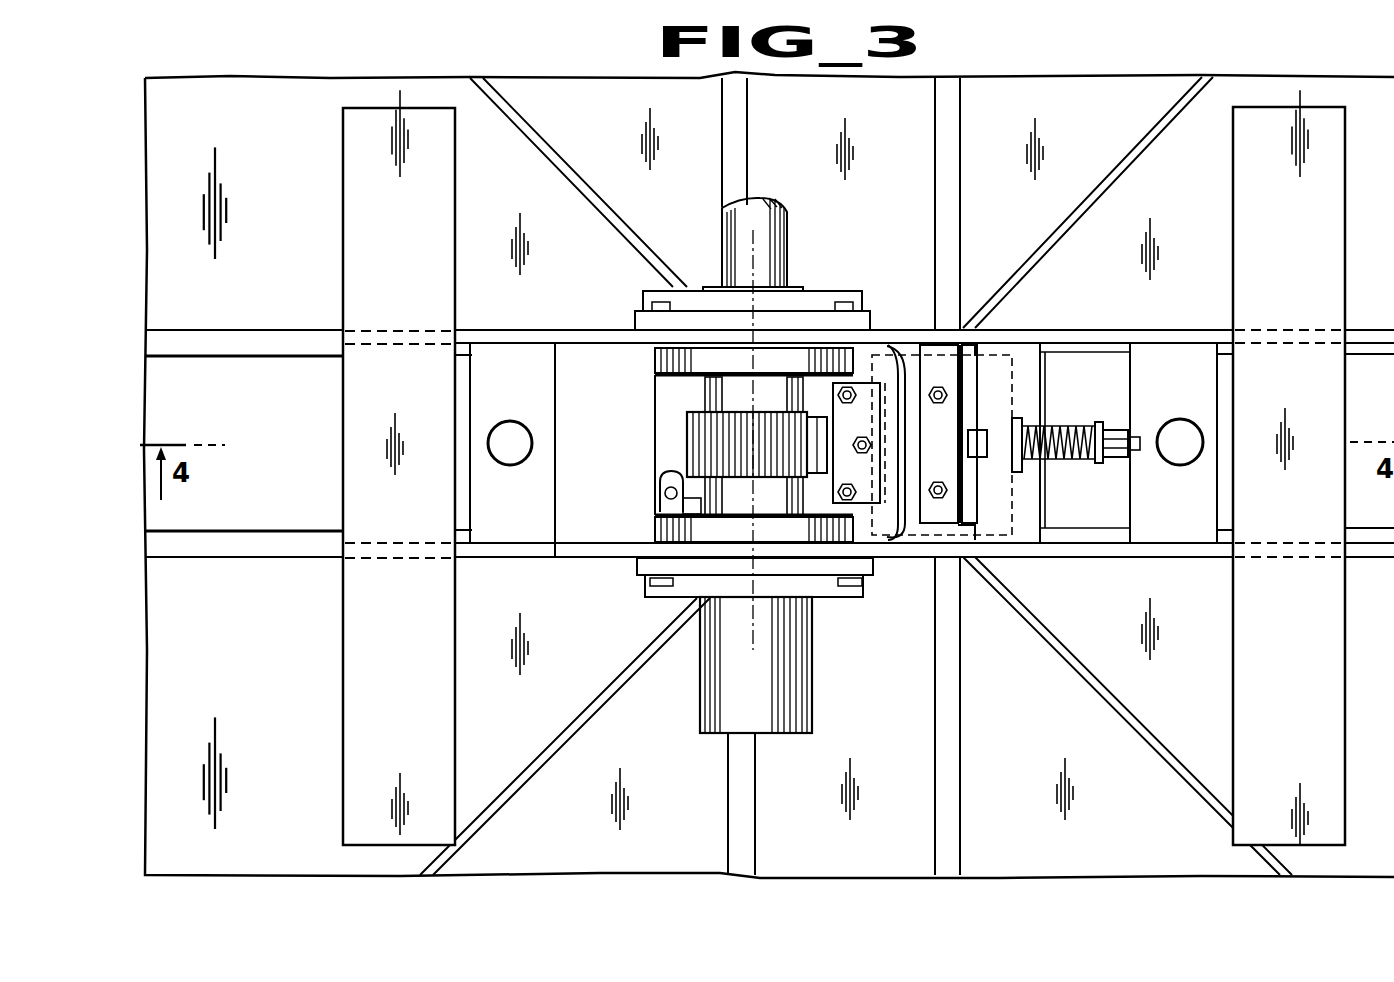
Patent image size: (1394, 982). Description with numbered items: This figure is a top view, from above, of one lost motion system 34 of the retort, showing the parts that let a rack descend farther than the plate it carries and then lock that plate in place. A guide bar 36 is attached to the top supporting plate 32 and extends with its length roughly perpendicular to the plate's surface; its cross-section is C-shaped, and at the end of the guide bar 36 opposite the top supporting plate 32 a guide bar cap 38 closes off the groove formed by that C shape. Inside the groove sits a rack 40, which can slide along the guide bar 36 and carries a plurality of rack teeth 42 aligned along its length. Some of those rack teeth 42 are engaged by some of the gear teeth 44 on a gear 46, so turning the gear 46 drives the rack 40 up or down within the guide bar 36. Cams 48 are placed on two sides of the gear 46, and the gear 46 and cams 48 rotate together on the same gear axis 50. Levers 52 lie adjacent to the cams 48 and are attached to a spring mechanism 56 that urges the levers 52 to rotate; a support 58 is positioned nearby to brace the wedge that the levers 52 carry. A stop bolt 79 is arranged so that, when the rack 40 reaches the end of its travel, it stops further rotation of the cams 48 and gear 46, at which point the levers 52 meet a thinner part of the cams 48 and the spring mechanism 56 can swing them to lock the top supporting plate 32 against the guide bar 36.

The top supporting plate 32 is at (507, 723).
The lost motion system 34 is at (645, 452).
The guide bar 36 is at (830, 343).
The guide bar cap 38 is at (885, 503).
The rack 40 is at (754, 496).
The rack teeth 42 is at (754, 394).
The gear teeth 44 is at (705, 446).
The gear 46 is at (688, 414).
The cams 48 is at (655, 360).
The gear axis 50 is at (750, 622).
The levers 52 is at (970, 343).
The spring mechanism 56 is at (1090, 416).
The support 58 is at (1044, 499).
The stop bolt 79 is at (662, 474).